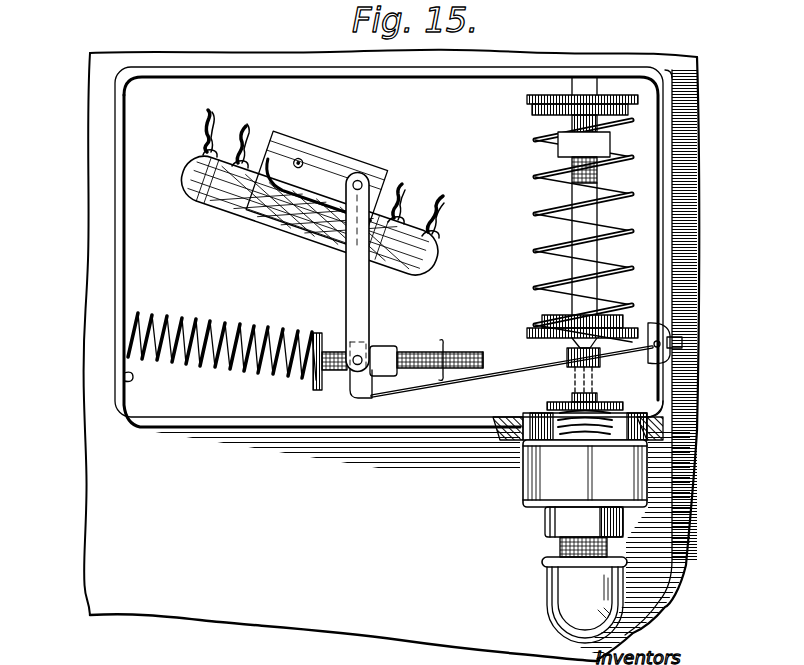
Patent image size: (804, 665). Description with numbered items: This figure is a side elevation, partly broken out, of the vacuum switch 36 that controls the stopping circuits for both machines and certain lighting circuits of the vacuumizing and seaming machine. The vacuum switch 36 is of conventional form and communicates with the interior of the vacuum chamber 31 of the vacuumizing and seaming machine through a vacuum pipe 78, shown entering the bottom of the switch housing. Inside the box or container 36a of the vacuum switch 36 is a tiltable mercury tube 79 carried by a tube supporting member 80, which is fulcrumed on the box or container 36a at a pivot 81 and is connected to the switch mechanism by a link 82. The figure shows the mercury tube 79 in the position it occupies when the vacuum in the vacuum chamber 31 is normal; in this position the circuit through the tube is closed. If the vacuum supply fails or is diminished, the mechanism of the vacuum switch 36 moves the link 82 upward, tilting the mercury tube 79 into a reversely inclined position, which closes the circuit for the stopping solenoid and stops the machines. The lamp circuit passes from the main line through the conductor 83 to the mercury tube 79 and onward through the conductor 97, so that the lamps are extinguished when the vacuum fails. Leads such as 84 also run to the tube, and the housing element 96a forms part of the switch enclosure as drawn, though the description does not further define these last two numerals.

The vacuum chamber 31 is at (97, 473).
The vacuum switch 36 is at (684, 246).
The box or container of the vacuum switch 36a is at (115, 373).
The casing housing 96a is at (117, 272).
The vacuum pipe 78 is at (553, 602).
The mercury tube 79 is at (308, 232).
The tube supporting member 80 is at (332, 155).
The fulcrum 81 is at (300, 160).
The link 82 is at (370, 295).
The conductor 83 is at (240, 131).
The lead wire 84 is at (206, 128).
The conductor 97 is at (446, 201).